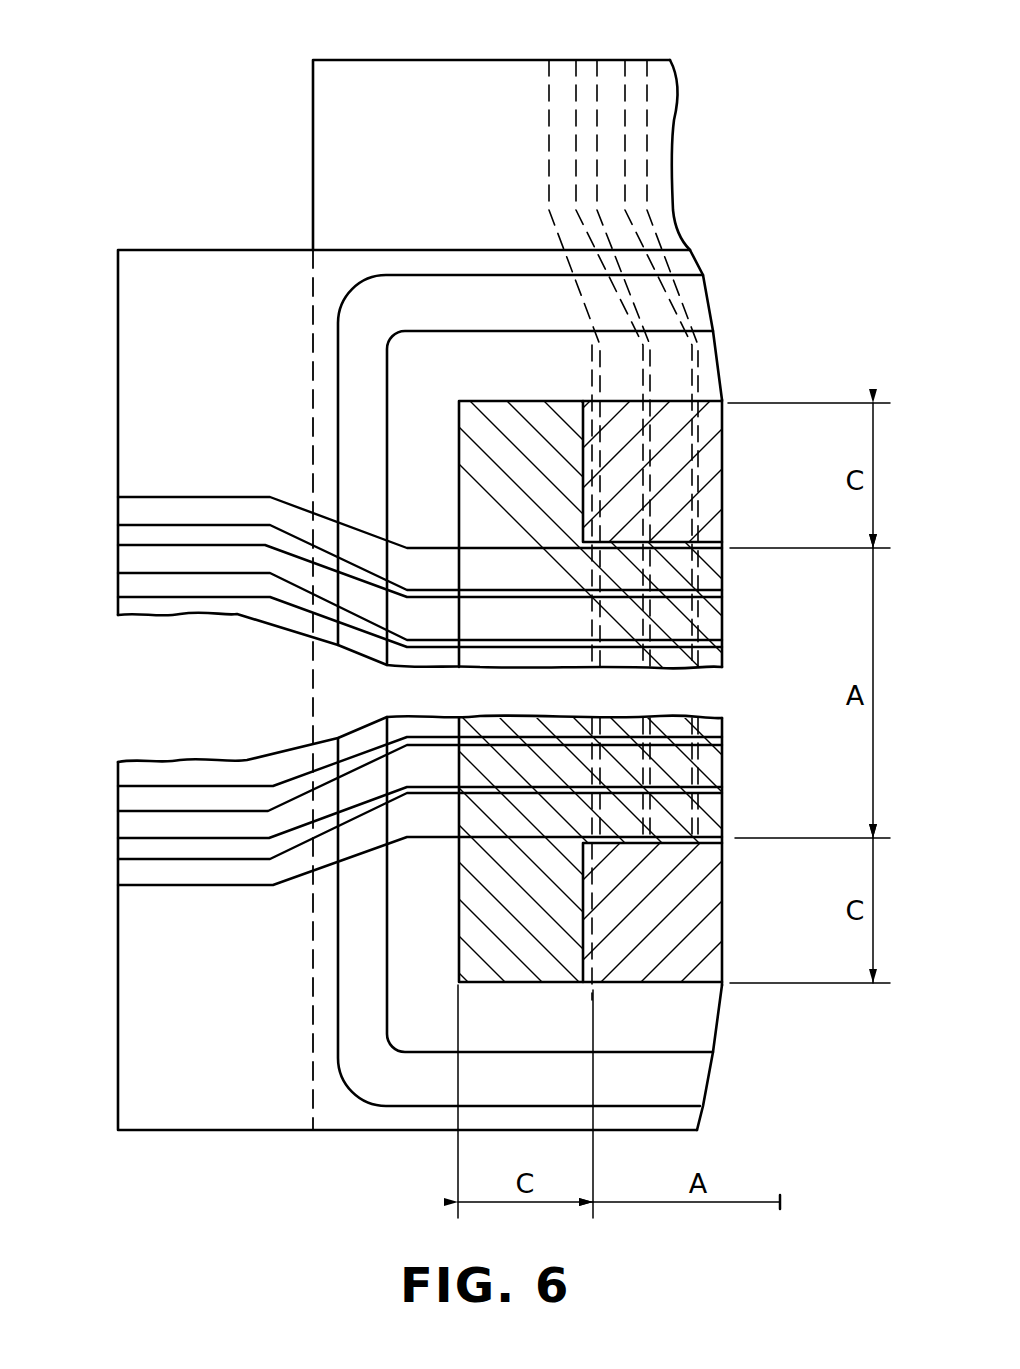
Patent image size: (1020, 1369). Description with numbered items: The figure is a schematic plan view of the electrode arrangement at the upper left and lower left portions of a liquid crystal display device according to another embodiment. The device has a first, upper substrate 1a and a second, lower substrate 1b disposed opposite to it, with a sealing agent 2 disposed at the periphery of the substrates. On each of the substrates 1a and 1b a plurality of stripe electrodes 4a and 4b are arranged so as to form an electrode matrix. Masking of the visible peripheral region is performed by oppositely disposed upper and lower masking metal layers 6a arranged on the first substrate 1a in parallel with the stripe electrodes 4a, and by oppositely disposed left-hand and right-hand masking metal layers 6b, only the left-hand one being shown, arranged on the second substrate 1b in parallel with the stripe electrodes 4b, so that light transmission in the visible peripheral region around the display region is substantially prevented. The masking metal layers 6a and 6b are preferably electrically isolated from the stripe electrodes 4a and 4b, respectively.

The first substrate 1a is at (193, 262).
The second substrate 1b is at (430, 78).
The sealing agent 2 is at (703, 307).
The stripe electrodes 4a is at (130, 510).
The stripe electrodes 4b is at (563, 72).
The masking metal layers 6a is at (707, 468).
The masking metal layers 6b is at (475, 455).